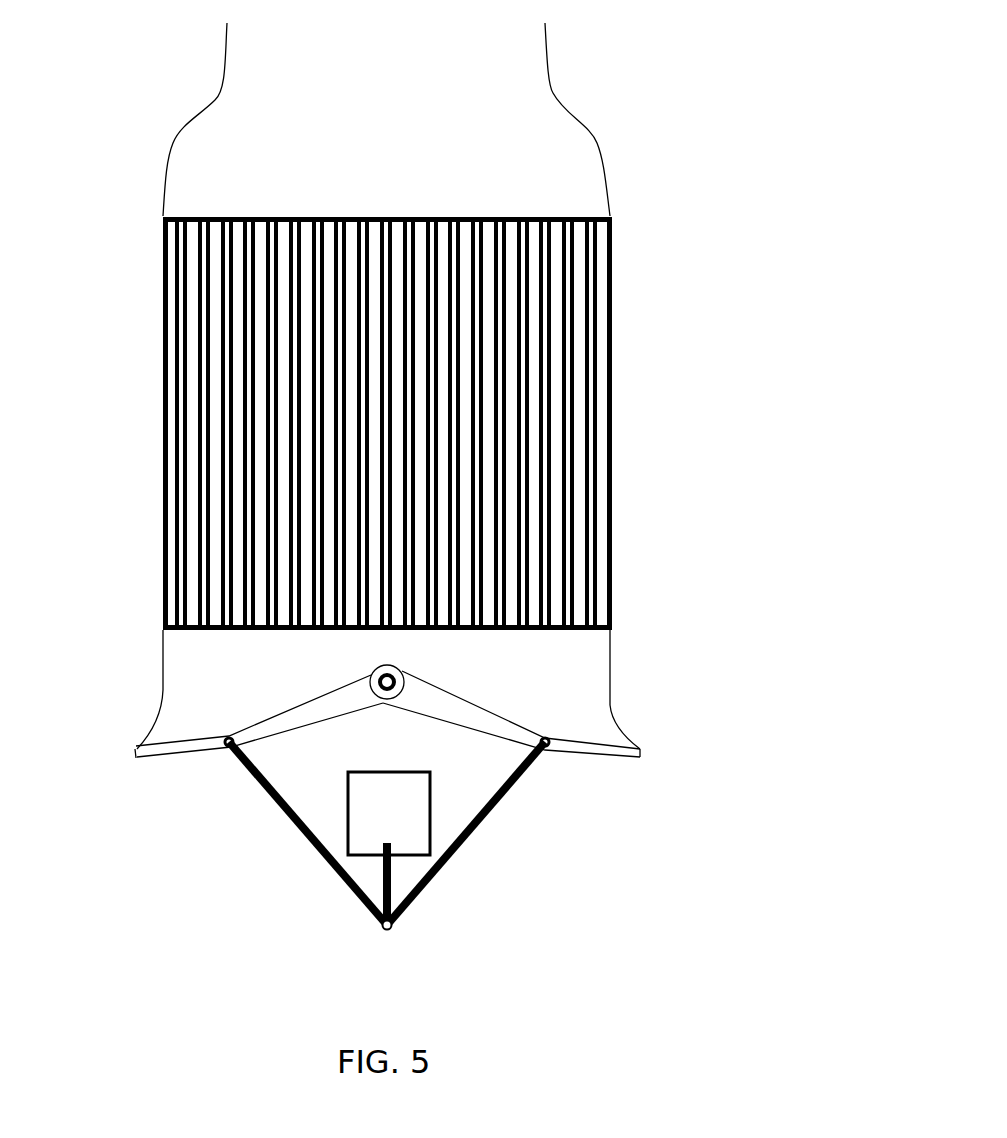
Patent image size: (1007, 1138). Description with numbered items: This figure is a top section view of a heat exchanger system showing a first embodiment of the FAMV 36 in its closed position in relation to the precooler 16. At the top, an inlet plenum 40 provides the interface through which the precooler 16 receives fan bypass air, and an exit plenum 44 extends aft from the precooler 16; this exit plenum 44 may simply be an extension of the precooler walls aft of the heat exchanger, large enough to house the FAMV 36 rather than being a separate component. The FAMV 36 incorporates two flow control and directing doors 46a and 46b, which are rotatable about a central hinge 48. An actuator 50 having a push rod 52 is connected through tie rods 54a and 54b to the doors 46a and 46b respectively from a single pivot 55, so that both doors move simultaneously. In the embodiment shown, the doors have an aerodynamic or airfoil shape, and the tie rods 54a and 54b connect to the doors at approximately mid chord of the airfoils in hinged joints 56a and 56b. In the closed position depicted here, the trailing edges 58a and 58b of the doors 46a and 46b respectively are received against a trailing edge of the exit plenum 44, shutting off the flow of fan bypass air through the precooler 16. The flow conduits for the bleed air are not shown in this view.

The precooler 16 is at (613, 353).
The FAMV 36 is at (485, 911).
The inlet plenum 40 is at (578, 120).
The exit plenum 44 is at (610, 690).
The flow control and directing door 46a is at (303, 723).
The flow control and directing door 46b is at (450, 717).
The central hinge 48 is at (372, 677).
The actuator 50 is at (367, 822).
The push rod 52 is at (392, 883).
The tie rod 54a is at (347, 885).
The tie rod 54b is at (473, 833).
The single pivot 55 is at (390, 930).
The hinged joint 56a is at (227, 743).
The hinged joint 56b is at (547, 743).
The trailing edge 58a is at (135, 758).
The trailing edge 58b is at (640, 757).